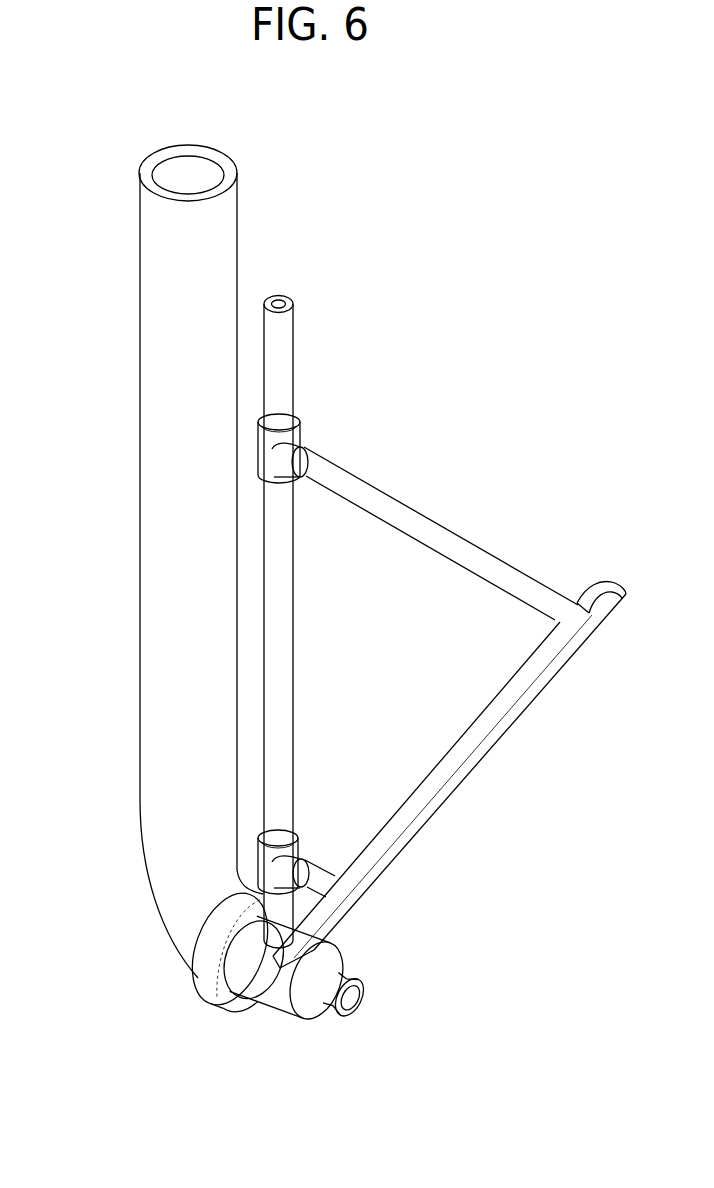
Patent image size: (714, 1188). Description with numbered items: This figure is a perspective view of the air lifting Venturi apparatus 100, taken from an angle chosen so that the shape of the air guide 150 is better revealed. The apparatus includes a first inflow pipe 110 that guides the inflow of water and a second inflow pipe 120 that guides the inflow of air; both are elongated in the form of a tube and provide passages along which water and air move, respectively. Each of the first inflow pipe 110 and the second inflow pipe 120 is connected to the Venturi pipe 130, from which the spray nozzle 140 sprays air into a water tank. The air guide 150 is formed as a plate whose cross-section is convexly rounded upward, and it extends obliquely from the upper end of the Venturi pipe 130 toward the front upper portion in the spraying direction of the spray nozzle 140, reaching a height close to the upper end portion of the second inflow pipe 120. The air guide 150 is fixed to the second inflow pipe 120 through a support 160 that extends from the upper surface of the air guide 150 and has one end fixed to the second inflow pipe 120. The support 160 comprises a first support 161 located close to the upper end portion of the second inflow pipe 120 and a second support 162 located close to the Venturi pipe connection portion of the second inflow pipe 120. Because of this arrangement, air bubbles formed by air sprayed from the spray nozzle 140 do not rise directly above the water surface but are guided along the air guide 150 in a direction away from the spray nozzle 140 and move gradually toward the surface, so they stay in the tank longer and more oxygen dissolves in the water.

The air lifting Venturi apparatus 100 is at (470, 248).
The first inflow pipe 110 is at (150, 515).
The second inflow pipe 120 is at (286, 346).
The Venturi pipe 130 is at (272, 996).
The spray nozzle 140 is at (366, 991).
The air guide 150 is at (532, 693).
The support 160 is at (418, 655).
The first support 161 is at (362, 492).
The second support 162 is at (322, 872).